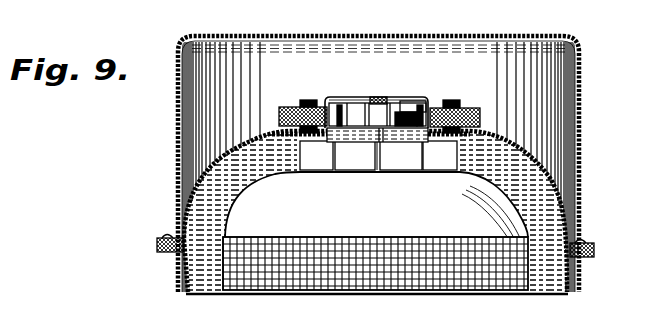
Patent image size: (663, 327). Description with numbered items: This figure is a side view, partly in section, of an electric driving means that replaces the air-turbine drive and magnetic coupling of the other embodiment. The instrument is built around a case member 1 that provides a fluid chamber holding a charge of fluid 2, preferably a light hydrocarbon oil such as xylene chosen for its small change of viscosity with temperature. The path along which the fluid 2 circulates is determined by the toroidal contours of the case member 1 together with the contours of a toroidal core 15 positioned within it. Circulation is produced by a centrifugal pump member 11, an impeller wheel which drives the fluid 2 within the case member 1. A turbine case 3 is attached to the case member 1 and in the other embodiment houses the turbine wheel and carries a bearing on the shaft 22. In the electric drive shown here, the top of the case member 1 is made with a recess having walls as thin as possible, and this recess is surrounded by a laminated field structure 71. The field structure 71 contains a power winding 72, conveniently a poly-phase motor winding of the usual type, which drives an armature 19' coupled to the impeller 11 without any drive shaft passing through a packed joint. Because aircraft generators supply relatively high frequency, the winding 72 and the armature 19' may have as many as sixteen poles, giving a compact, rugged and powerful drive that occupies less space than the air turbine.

The case member 1 is at (568, 277).
The fluid 2 is at (523, 172).
The turbine case 3 is at (576, 213).
The centrifugal pump member 11 is at (480, 133).
The toroidal core 15 is at (375, 231).
The armature 19' is at (431, 90).
The shaft 22 is at (378, 104).
The laminated field structure 71 is at (475, 108).
The power winding 72 is at (310, 103).